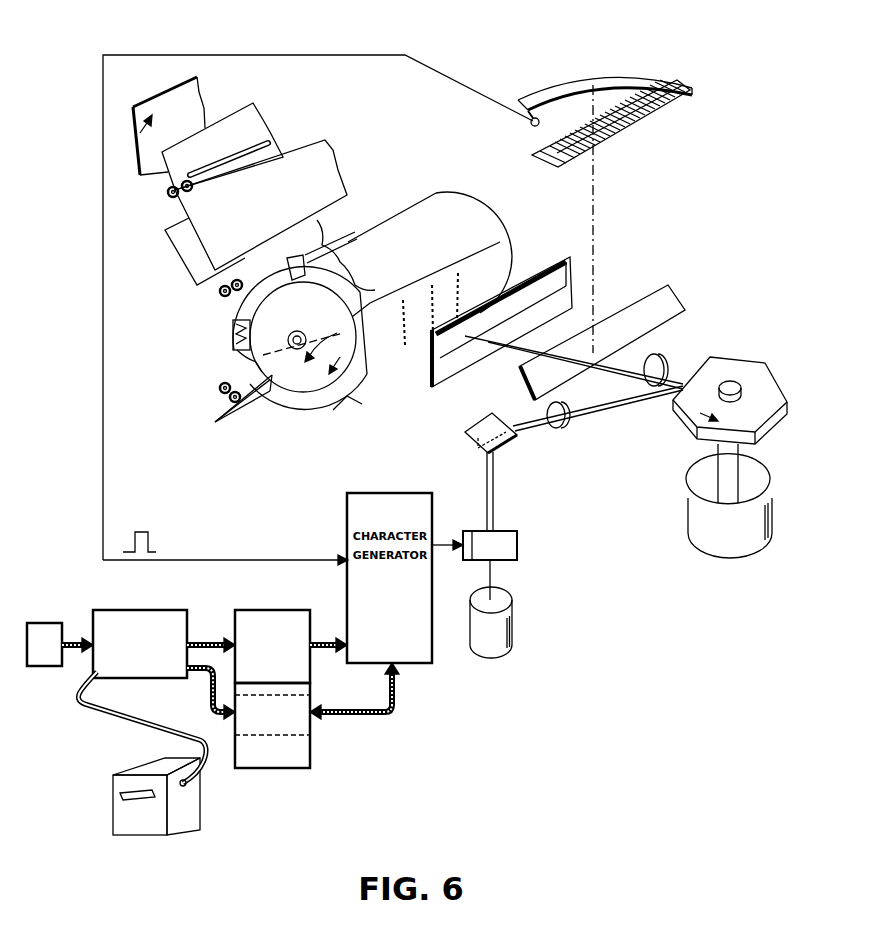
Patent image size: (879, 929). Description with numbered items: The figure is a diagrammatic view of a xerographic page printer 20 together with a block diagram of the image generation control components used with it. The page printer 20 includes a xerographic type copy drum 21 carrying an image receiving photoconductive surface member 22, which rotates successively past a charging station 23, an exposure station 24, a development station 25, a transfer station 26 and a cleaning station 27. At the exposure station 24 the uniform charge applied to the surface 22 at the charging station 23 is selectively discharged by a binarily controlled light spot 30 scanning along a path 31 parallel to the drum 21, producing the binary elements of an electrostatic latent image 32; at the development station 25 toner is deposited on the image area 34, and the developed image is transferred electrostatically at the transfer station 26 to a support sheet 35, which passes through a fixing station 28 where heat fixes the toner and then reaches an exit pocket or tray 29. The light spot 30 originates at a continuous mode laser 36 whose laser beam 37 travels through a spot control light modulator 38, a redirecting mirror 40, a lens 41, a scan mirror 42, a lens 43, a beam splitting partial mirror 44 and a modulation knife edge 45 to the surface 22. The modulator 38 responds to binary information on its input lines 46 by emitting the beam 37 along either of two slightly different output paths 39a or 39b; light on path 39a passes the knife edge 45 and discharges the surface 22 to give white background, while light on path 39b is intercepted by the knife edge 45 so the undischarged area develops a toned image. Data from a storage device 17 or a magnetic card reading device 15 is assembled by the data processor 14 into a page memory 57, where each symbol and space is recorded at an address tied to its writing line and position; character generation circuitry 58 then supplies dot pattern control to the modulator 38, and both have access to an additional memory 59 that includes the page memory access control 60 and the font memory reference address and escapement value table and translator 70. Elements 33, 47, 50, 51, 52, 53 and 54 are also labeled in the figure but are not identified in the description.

The data processor 14 is at (108, 610).
The magnetic card reading device 15 is at (200, 800).
The storage device 17 is at (42, 622).
The page printer 20 is at (259, 410).
The copy drum 21 is at (353, 385).
The photoconductive surface member 22 is at (352, 324).
The charging station 23 is at (348, 240).
The exposure station 24 is at (425, 270).
The development station 25 is at (333, 412).
The transfer station 26 is at (233, 330).
The cleaning station 27 is at (290, 256).
The fixing station 28 is at (185, 275).
The exit pocket or tray 29 is at (137, 136).
The light spot 30 is at (352, 316).
The path 31 is at (317, 358).
The electrostatic latent image 32 is at (462, 275).
The character row 33 is at (403, 298).
The image area 34 is at (433, 285).
The support sheet 35 is at (243, 360).
The continuous mode laser 36 is at (514, 622).
The laser beam 37 is at (492, 575).
The spot control light modulator 38 is at (519, 543).
The output path 39a is at (486, 470).
The output path 39b is at (494, 505).
The redirecting mirror 40 is at (472, 428).
The lens 41 is at (562, 430).
The scan mirror 42 is at (738, 358).
The lens 43 is at (667, 362).
The beam splitting partial mirror 44 is at (655, 290).
The modulation knife edge 45 is at (440, 386).
The input lines 46 is at (440, 545).
The motor 47 is at (720, 556).
The lens array 50 is at (652, 120).
The guide 51 is at (655, 78).
The pivot 52 is at (527, 128).
The pulse signal 53 is at (140, 530).
The array end 54 is at (540, 152).
The page memory 57 is at (236, 612).
The character generation circuitry 58 is at (415, 664).
The additional memory 59 is at (311, 765).
The page memory access control 60 is at (311, 740).
The font memory reference address and escapement value table and translator 70 is at (285, 769).